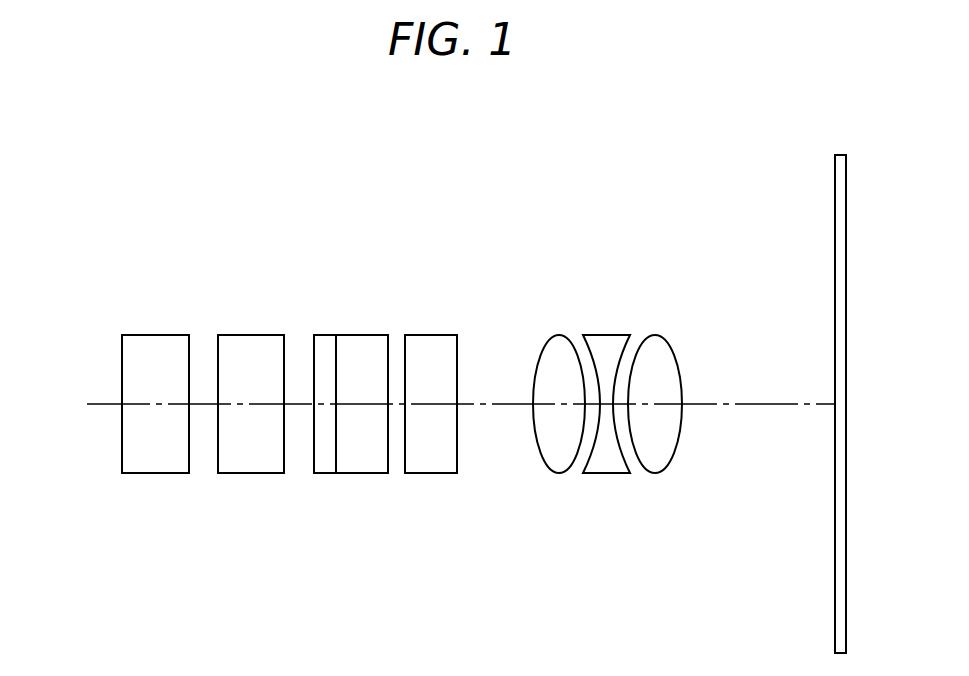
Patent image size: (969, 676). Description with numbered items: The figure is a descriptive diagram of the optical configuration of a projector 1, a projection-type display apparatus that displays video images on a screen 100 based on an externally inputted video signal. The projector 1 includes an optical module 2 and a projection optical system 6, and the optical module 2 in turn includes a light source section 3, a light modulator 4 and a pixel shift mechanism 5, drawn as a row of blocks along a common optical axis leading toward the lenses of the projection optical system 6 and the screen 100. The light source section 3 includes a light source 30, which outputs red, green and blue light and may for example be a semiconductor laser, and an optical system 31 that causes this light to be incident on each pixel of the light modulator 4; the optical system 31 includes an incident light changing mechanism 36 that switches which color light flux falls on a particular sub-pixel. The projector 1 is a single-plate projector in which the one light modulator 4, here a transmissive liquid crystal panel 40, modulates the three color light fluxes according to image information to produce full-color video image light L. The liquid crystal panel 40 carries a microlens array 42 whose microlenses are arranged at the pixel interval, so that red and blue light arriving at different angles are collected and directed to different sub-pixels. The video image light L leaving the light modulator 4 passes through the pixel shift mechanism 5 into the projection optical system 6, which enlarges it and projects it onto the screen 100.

The projector 1 is at (92, 250).
The optical module 2 is at (291, 452).
The light source section 3 is at (212, 462).
The light source 30 is at (158, 473).
The incident light changing mechanism 36 is at (258, 441).
The optical system 31 is at (242, 473).
The light modulator 4 is at (354, 428).
The transmissive liquid crystal panel 40 is at (351, 404).
The microlens array 42 is at (325, 335).
The pixel shift mechanism 5 is at (431, 462).
The projection optical system 6 is at (680, 498).
The screen 100 is at (835, 193).
The video image light L is at (757, 405).